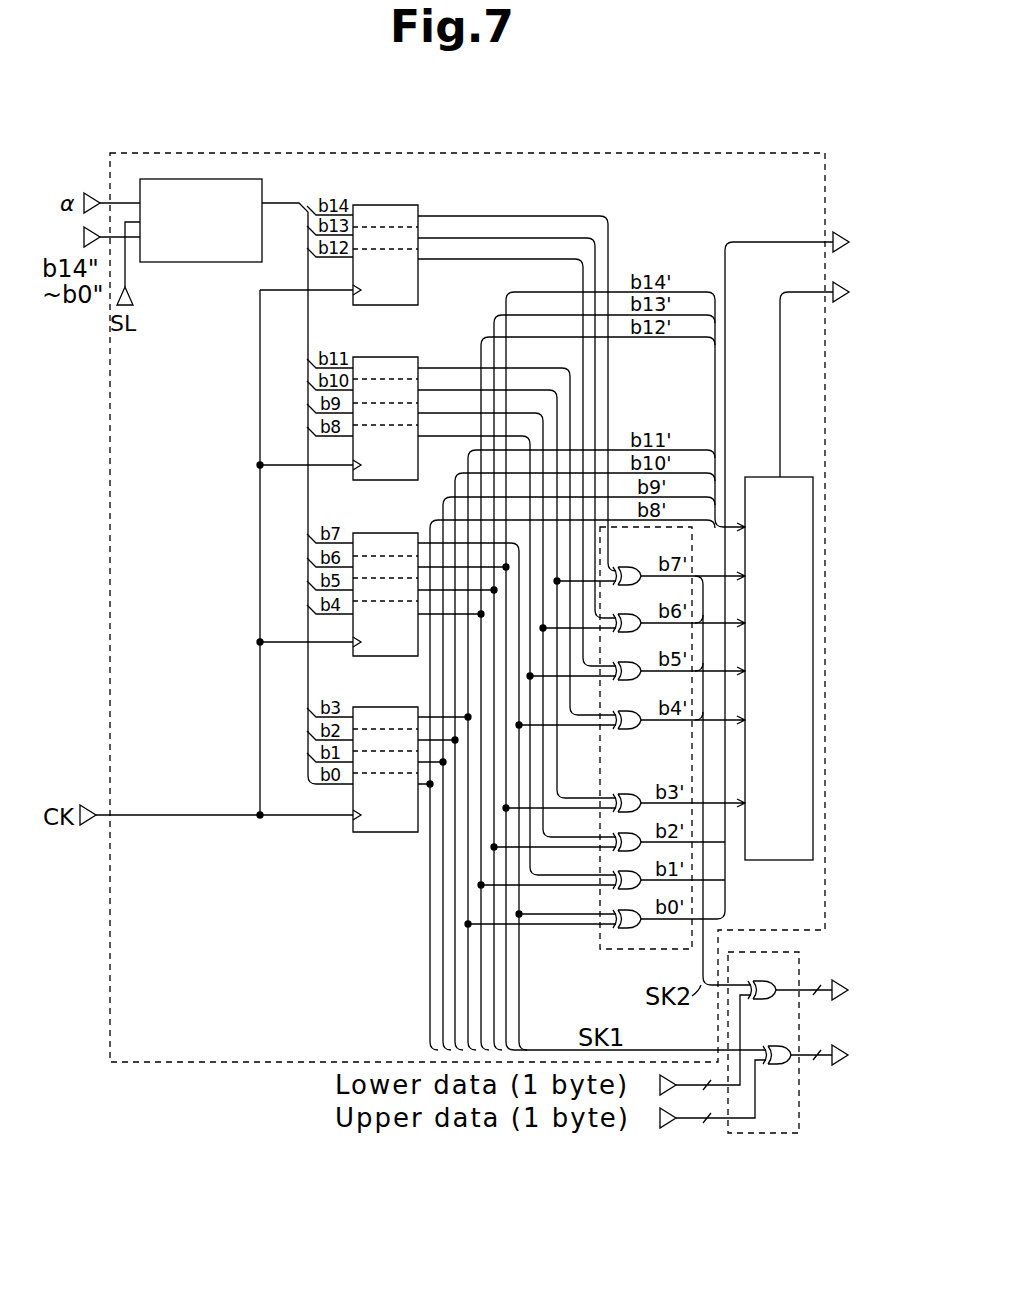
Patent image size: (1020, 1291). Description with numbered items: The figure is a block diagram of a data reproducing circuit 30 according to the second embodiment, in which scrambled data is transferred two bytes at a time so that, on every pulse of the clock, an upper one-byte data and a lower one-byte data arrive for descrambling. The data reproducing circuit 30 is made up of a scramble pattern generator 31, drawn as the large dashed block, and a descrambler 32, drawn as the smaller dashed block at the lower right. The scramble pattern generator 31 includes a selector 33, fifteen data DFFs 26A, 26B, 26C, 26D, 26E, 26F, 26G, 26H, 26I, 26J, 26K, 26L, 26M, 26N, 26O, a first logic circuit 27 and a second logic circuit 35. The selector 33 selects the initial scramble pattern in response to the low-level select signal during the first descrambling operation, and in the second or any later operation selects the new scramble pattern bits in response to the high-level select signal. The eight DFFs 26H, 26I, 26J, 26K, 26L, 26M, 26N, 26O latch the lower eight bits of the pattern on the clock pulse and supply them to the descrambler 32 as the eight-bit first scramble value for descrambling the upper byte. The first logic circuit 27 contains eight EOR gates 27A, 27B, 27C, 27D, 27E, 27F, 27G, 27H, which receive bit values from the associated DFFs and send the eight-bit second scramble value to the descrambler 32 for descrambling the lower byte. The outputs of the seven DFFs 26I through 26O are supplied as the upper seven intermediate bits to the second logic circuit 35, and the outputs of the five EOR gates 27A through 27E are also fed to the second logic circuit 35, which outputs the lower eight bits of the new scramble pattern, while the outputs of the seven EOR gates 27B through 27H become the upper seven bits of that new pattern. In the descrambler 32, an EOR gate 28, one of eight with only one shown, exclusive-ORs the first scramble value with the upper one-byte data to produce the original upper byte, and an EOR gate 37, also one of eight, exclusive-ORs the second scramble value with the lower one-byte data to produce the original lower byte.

The data DFF 26A is at (385, 216).
The data DFF 26B is at (385, 238).
The data DFF 26C is at (385, 277).
The data DFF 26D is at (385, 368).
The data DFF 26E is at (385, 391).
The data DFF 26F is at (385, 414).
The data DFF 26G is at (385, 452).
The data DFF 26H is at (385, 544).
The data DFF 26I is at (385, 567).
The data DFF 26J is at (385, 589).
The data DFF 26K is at (385, 628).
The data DFF 26L is at (385, 718).
The data DFF 26M is at (385, 740).
The data DFF 26N is at (385, 762).
The data DFF 26O is at (385, 802).
The first logic circuit 27 is at (600, 951).
The EOR gate 27A is at (631, 566).
The EOR gate 27B is at (631, 613).
The EOR gate 27C is at (631, 661).
The EOR gate 27D is at (634, 701).
The EOR gate 27E is at (627, 793).
The EOR gate 27F is at (640, 833).
The EOR gate 27G is at (640, 871).
The EOR gate 27H is at (640, 909).
The EOR gate 28 is at (780, 1066).
The data reproducing circuit 30 is at (856, 149).
The scramble pattern generator 31 is at (693, 149).
The descrambler 32 is at (801, 1123).
The selector 33 is at (222, 267).
The second logic circuit 35 is at (760, 474).
The EOR gate 37 is at (763, 981).